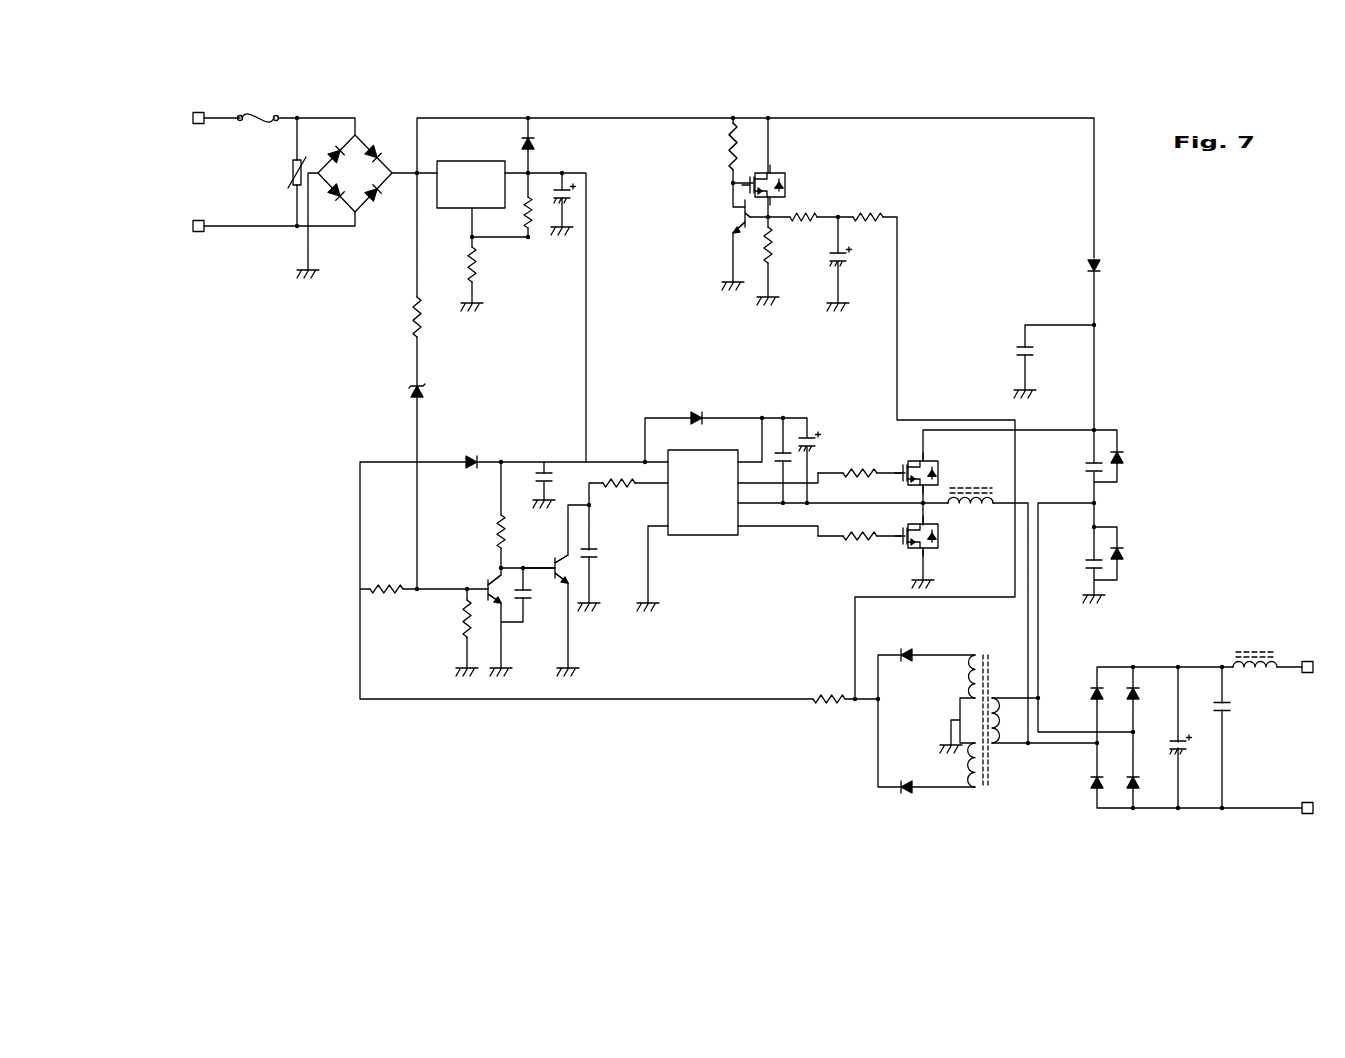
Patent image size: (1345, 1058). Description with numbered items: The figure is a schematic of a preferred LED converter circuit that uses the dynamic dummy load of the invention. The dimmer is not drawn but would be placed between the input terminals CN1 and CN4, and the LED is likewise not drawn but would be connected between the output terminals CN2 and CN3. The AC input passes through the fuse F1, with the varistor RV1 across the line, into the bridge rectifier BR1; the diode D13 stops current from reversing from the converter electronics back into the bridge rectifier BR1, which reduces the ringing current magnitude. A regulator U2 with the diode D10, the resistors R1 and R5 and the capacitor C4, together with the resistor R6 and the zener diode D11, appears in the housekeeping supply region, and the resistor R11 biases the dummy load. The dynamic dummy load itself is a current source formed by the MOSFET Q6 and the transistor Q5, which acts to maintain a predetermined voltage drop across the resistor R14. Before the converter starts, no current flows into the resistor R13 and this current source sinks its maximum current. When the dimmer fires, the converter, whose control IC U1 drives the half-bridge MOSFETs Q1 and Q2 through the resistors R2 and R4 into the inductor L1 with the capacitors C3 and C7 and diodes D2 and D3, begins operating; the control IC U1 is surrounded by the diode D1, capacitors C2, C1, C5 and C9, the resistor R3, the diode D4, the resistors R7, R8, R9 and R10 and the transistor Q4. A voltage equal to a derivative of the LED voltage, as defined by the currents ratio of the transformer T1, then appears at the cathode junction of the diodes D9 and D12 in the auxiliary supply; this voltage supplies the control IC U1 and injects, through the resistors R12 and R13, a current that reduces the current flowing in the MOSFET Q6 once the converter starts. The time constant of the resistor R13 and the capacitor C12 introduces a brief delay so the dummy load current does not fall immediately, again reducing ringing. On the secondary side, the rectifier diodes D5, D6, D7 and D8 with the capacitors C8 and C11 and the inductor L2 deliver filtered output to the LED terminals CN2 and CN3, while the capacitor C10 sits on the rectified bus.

The terminal CN1 is at (198, 142).
The terminal CN4 is at (200, 251).
The fuse 1A F1 is at (258, 96).
The varistor V130LA1 RV1 is at (265, 181).
The bridge rectifier BR1 is at (355, 203).
The resistor 220K R6 is at (398, 316).
The zener diode 22V D11 is at (399, 396).
The regulator LR8N8 U2 is at (471, 184).
The diode MRA4007 D10 is at (561, 124).
The resistor 220K R5 is at (534, 240).
The resistor 47K R1 is at (457, 255).
The capacitor 47uF C4 is at (591, 201).
The resistor 47K R11 is at (716, 147).
The MOSFET Q6 is at (789, 166).
The transistor Q5 is at (715, 220).
The resistor R12 is at (811, 197).
The resistor R13 is at (871, 197).
The resistor R14 is at (785, 259).
The capacitor C12 is at (859, 264).
The diode D13 is at (1128, 275).
The capacitor 100n C10 is at (1005, 352).
The MOSFET IRFR210 Q1 is at (897, 458).
The MOSFET IRFR210 Q2 is at (943, 544).
The resistor 0R R2 is at (862, 484).
The resistor 0R R4 is at (862, 529).
The inductor 150uH L1 is at (977, 476).
The capacitor 10n C3 is at (1078, 469).
The diode MURA120 D2 is at (1152, 463).
The capacitor 10n C7 is at (1078, 565).
The diode MURA120 D3 is at (1152, 558).
The control IC U1 is at (703, 492).
The diode MURA120 D1 is at (685, 397).
The capacitor 100n C2 is at (783, 418).
The capacitor 47uF C1 is at (825, 421).
The resistor 2K2 R3 is at (619, 465).
The capacitor 1000p C9 is at (578, 599).
The diode BAS16 D4 is at (469, 466).
The capacitor 100n C5 is at (543, 448).
The resistor 100K R7 is at (521, 536).
The resistor 330K R8 is at (389, 568).
The transistor BC817 Q4 is at (469, 573).
The resistor 47K R9 is at (451, 623).
The resistor 100R R10 is at (830, 679).
The diode D12 is at (905, 634).
The diode D9 is at (906, 766).
The transformer T1 is at (985, 700).
The diode MBRA130 D5 is at (1079, 661).
The diode MBRA130 D6 is at (1161, 661).
The diode MBRA130 D7 is at (1063, 790).
The diode MBRA130 D8 is at (1134, 814).
The capacitor 47uF C8 is at (1194, 764).
The capacitor 10uF C11 is at (1240, 720).
The inductor 2u2 L2 is at (1255, 636).
The terminal CN2 is at (1306, 691).
The terminal CN3 is at (1307, 829).